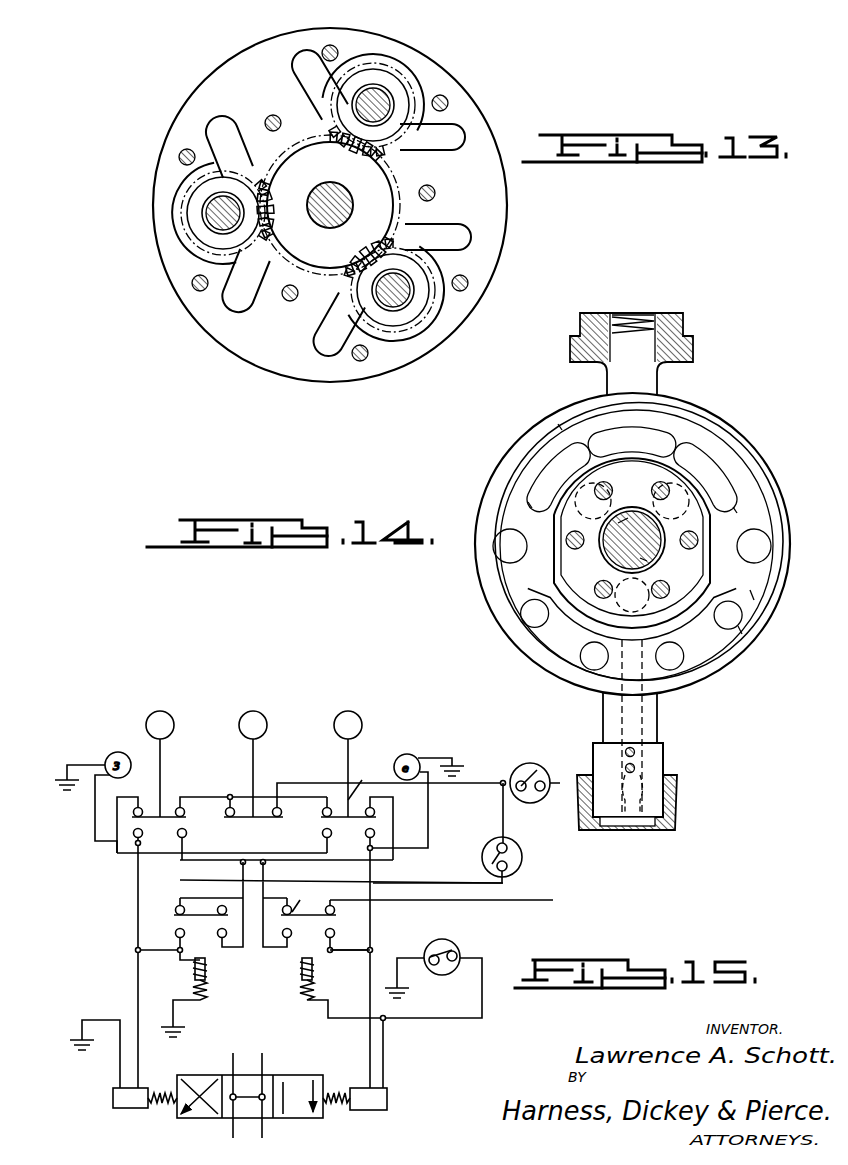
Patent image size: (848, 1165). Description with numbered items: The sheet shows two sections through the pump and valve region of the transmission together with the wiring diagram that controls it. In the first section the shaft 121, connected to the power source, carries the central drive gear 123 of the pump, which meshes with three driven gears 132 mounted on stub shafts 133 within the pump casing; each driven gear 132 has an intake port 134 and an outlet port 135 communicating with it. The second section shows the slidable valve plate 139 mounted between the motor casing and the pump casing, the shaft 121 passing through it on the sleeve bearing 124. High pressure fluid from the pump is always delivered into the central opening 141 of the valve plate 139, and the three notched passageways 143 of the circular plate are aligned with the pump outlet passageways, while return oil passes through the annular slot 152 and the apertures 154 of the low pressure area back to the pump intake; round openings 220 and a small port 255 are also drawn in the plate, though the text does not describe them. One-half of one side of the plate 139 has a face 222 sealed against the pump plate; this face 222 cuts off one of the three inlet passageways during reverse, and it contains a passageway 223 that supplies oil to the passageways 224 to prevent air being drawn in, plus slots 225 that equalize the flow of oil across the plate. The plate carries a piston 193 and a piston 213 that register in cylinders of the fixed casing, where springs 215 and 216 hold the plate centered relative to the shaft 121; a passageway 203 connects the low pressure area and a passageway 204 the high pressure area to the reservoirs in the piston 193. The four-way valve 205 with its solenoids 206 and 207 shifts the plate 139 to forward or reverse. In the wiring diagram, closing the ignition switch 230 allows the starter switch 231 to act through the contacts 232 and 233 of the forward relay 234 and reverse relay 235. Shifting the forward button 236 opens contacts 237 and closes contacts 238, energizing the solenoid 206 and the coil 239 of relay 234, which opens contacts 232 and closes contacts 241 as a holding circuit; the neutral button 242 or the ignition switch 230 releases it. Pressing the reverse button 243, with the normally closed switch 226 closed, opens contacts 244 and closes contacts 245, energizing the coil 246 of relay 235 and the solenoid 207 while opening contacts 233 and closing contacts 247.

In FIG. 13, the shaft 121 is at (340, 192).
In FIG. 14, the shaft 121 is at (645, 548).
In FIG. 13, the drive gear 123 is at (395, 165).
In FIG. 14, the sleeve bearing 124 is at (648, 518).
In FIG. 13, the driven gears 132 is at (415, 88).
In FIG. 13, the stub shafts 133 is at (380, 92).
In FIG. 13, the intake port 134 is at (443, 135).
In FIG. 13, the outlet port 135 is at (290, 84).
In FIG. 14, the slidable valve plate 139 is at (725, 428).
In FIG. 14, the central opening 141 is at (672, 610).
In FIG. 14, the notched passageways 143 is at (620, 610).
In FIG. 14, the annular slot 152 is at (752, 595).
In FIG. 14, the apertures 154 is at (740, 630).
In FIG. 14, the piston 193 is at (664, 760).
In FIG. 14, the passageway 203 is at (614, 712).
In FIG. 14, the passageway 204 is at (655, 716).
In FIG. 15, the four-way valve 205 is at (215, 1120).
In FIG. 15, the solenoid 206 is at (122, 1110).
In FIG. 15, the solenoid 207 is at (387, 1100).
In FIG. 14, the piston 213 is at (652, 340).
In FIG. 14, the spring 215 is at (632, 315).
In FIG. 14, the spring 216 is at (640, 830).
In FIG. 14, the holes 220 is at (585, 628).
In FIG. 14, the face 222 is at (548, 452).
In FIG. 14, the passageway 223 is at (560, 427).
In FIG. 14, the passageways 224 is at (647, 433).
In FIG. 14, the slots 225 is at (530, 505).
In FIG. 15, the switch 226 is at (460, 945).
In FIG. 15, the ignition switch 230 is at (555, 752).
In FIG. 15, the starter switch 231 is at (523, 858).
In FIG. 15, the contacts 232 is at (200, 905).
In FIG. 15, the contacts 233 is at (305, 893).
In FIG. 15, the forward relay 234 is at (195, 970).
In FIG. 15, the reverse relay 235 is at (302, 970).
In FIG. 15, the forward button 236 is at (150, 713).
In FIG. 15, the contacts 237 is at (162, 810).
In FIG. 15, the contacts 238 is at (128, 862).
In FIG. 15, the coil 239 is at (195, 992).
In FIG. 15, the contacts 241 is at (170, 935).
In FIG. 15, the neutral button 242 is at (242, 712).
In FIG. 15, the reverse button 243 is at (360, 715).
In FIG. 15, the contacts 244 is at (366, 776).
In FIG. 15, the contacts 245 is at (326, 832).
In FIG. 15, the coil 246 is at (303, 995).
In FIG. 15, the contacts 247 is at (345, 932).
In FIG. 14, the groove 255 is at (735, 510).